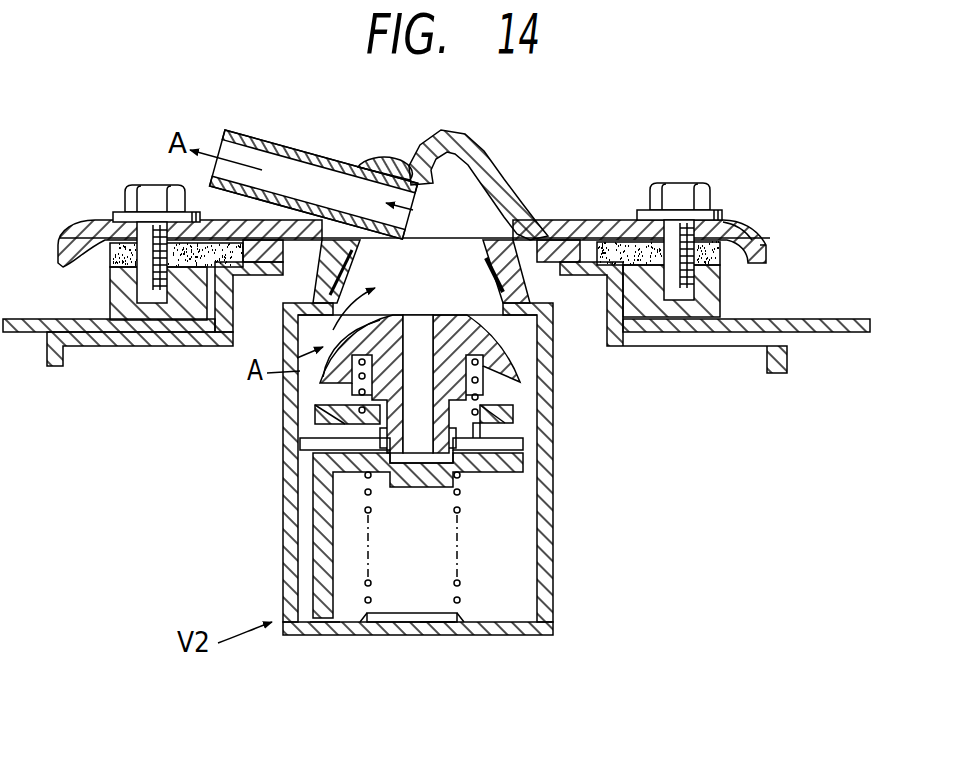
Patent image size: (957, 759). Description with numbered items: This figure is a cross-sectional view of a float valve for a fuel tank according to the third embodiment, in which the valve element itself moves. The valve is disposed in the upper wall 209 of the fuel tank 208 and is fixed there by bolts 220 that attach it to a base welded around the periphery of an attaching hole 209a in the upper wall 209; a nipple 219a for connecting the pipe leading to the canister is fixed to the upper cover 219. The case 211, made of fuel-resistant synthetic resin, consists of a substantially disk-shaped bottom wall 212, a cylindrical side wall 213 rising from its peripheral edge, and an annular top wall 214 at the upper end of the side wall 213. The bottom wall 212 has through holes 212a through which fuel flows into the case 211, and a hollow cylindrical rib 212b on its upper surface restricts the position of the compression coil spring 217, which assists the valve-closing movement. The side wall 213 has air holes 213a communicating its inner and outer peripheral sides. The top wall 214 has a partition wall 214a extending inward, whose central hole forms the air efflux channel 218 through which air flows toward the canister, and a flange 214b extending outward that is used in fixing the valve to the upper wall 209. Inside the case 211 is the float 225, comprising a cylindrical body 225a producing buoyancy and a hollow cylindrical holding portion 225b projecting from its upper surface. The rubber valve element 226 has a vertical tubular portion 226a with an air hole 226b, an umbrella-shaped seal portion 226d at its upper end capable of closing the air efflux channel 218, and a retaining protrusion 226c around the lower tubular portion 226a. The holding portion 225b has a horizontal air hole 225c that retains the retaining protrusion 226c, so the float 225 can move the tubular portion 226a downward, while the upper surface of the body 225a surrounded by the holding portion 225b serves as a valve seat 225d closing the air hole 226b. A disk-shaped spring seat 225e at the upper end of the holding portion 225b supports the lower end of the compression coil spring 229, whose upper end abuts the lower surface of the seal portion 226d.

The fuel tank 208 is at (805, 300).
The upper wall 209 is at (830, 326).
The attaching hole 209a is at (580, 242).
The case 211 is at (498, 481).
The bottom wall 212 is at (490, 634).
The through holes 212a is at (325, 634).
The hollow cylindrical rib 212b is at (436, 634).
The side wall 213 is at (542, 598).
The air holes 213a is at (300, 338).
The top wall 214 is at (540, 238).
The partition wall 214a is at (421, 271).
The flange 214b is at (600, 242).
The compression coil spring 217 is at (362, 616).
The air efflux channel 218 is at (466, 240).
The upper cover 219 is at (750, 232).
The nipple 219a is at (327, 150).
The bolts 220 is at (689, 183).
The float 225 is at (457, 511).
The body 225a is at (418, 535).
The holding portion 225b is at (523, 448).
The air hole 225c is at (390, 455).
The valve seat 225d is at (420, 500).
The spring seat 225e is at (514, 416).
The valve element 226 is at (411, 378).
The tubular portion 226a is at (362, 392).
The air hole 226b is at (420, 327).
The retaining protrusion 226c is at (383, 430).
The seal portion 226d is at (540, 388).
The compression coil spring 229 is at (348, 405).